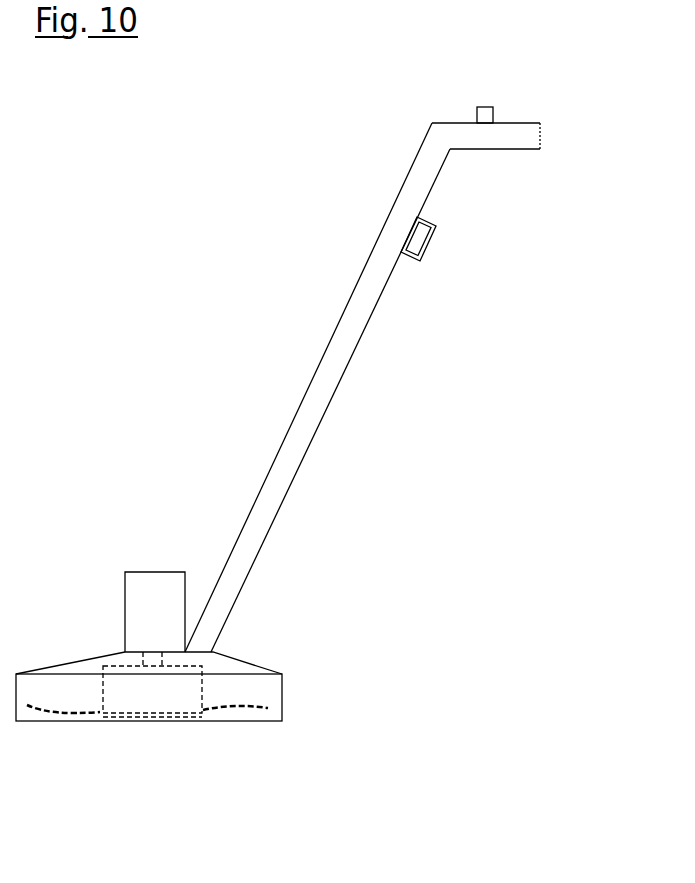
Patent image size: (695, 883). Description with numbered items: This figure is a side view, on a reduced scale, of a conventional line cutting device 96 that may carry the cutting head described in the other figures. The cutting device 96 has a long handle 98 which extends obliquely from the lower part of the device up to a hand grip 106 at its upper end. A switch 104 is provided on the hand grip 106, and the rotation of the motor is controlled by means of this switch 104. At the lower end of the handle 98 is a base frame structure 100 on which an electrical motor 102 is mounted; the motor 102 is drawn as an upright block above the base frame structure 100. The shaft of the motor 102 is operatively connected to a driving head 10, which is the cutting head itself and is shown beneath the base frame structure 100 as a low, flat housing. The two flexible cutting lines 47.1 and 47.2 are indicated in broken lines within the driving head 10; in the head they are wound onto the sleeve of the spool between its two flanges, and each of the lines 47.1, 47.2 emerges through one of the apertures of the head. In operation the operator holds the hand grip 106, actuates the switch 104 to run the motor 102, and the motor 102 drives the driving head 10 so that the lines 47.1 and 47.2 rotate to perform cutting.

The cutting device 96 is at (283, 252).
The handle 98 is at (357, 327).
The hand grip 106 is at (530, 137).
The switch 104 is at (485, 107).
The electrical motor 102 is at (135, 590).
The base frame structure 100 is at (232, 665).
The driving head 10 is at (193, 697).
The line 47.1 is at (67, 715).
The line 47.2 is at (255, 707).